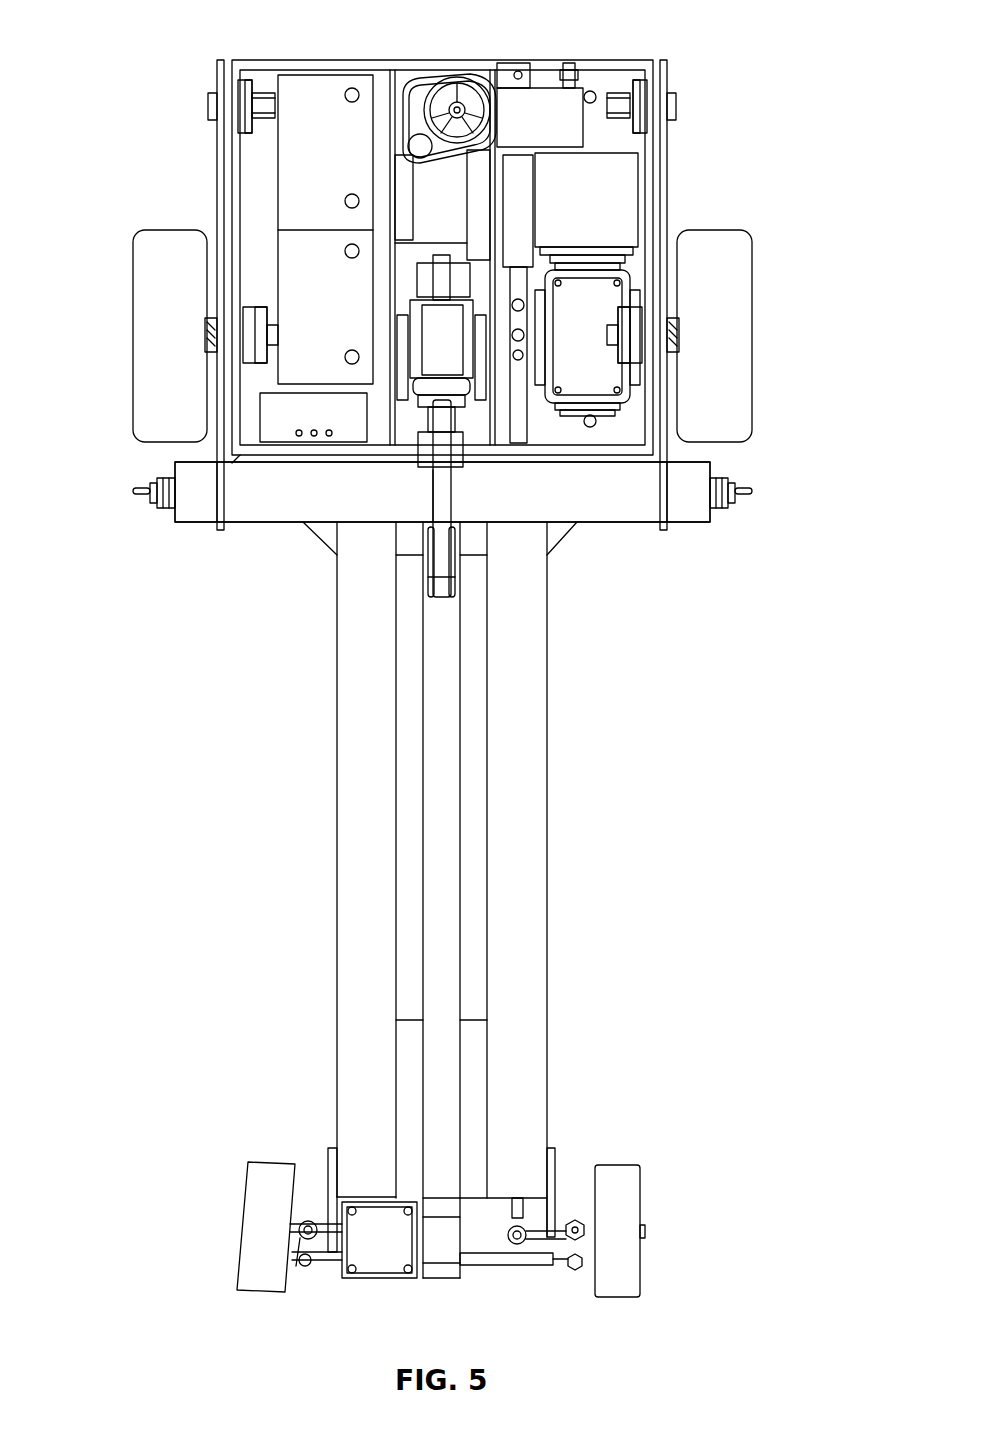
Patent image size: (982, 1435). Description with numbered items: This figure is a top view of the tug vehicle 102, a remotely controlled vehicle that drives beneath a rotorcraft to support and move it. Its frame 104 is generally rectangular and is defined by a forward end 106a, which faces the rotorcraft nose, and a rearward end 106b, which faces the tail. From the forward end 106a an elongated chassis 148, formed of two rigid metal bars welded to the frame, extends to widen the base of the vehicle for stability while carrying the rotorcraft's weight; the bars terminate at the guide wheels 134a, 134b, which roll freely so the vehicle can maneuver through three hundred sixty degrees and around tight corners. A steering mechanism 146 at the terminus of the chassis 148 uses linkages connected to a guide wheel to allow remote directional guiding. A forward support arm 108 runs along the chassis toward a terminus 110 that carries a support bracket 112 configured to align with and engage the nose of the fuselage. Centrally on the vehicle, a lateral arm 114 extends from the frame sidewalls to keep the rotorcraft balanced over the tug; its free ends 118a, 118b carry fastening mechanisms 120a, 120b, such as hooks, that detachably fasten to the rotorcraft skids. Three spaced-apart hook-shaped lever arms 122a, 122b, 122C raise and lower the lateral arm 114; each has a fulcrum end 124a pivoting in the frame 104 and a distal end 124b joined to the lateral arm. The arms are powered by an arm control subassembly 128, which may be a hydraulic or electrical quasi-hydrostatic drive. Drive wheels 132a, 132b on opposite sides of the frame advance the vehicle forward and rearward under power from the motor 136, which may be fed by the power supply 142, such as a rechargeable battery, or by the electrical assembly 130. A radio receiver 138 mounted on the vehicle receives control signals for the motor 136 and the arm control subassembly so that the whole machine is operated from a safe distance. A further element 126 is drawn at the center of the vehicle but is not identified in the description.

The tug vehicle 102 is at (148, 120).
The frame 104 is at (337, 853).
The forward end 106a is at (240, 541).
The rearward end 106b is at (624, 56).
The forward support arm 108 is at (440, 918).
The terminus 110 is at (458, 1277).
The support bracket 112 is at (378, 1263).
The lateral arm 114 is at (590, 522).
The free end 118a is at (721, 480).
The free end 118b is at (162, 478).
The fastening mechanism 120a is at (740, 497).
The fastening mechanism 120b is at (145, 498).
The lever arm 122a is at (667, 497).
The lever arm 122b is at (440, 487).
The lever arm 122C is at (222, 500).
The fulcrum end 124a is at (668, 128).
The distal end 124b is at (241, 106).
The drive shaft 126 is at (476, 445).
The arm control subassembly 128 is at (436, 350).
The electrical assembly 130 is at (510, 72).
The drive wheel 132a is at (752, 282).
The drive wheel 132b is at (133, 293).
The guide wheel 134a is at (628, 1183).
The guide wheel 134b is at (240, 1245).
The motor 136 is at (607, 345).
The radio receiver 138 is at (562, 125).
The power supply 142 is at (348, 155).
The steering mechanism 146 is at (570, 1222).
The elongated chassis 148 is at (548, 730).